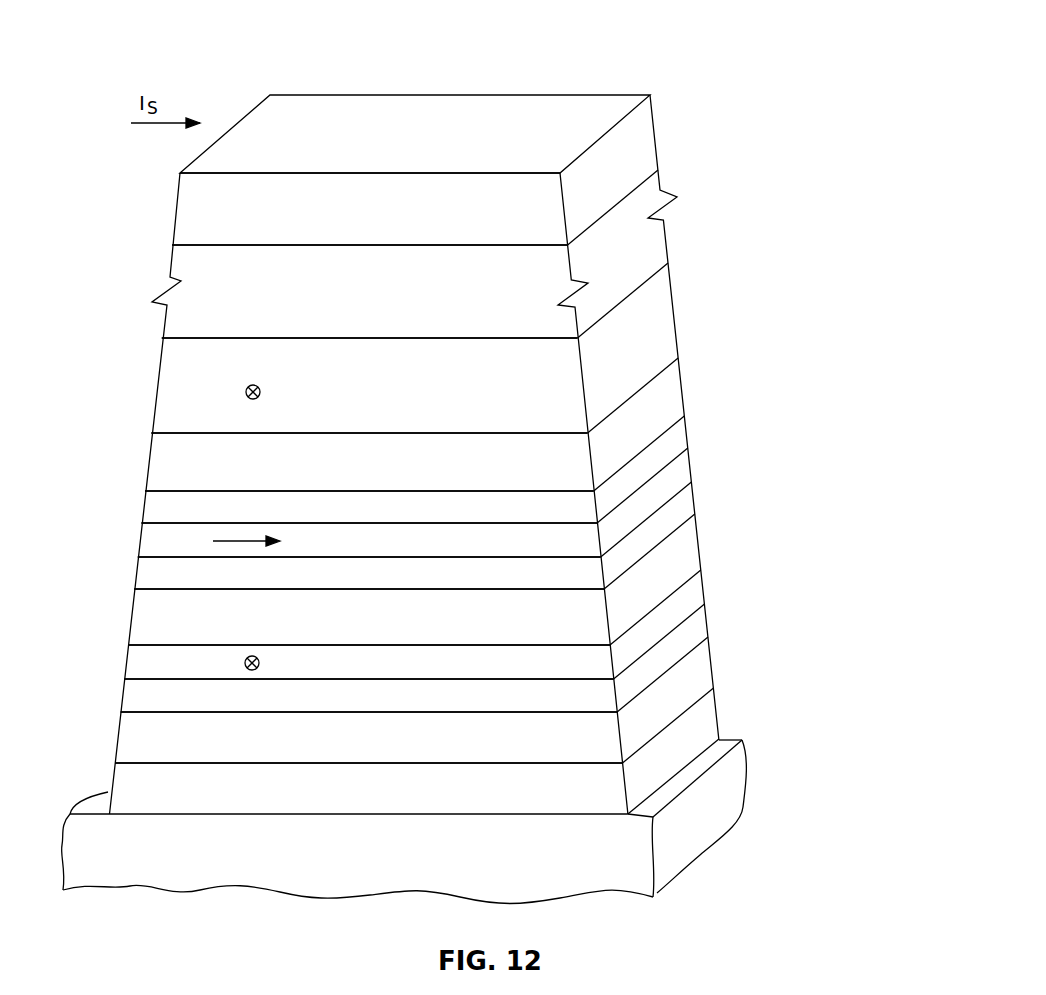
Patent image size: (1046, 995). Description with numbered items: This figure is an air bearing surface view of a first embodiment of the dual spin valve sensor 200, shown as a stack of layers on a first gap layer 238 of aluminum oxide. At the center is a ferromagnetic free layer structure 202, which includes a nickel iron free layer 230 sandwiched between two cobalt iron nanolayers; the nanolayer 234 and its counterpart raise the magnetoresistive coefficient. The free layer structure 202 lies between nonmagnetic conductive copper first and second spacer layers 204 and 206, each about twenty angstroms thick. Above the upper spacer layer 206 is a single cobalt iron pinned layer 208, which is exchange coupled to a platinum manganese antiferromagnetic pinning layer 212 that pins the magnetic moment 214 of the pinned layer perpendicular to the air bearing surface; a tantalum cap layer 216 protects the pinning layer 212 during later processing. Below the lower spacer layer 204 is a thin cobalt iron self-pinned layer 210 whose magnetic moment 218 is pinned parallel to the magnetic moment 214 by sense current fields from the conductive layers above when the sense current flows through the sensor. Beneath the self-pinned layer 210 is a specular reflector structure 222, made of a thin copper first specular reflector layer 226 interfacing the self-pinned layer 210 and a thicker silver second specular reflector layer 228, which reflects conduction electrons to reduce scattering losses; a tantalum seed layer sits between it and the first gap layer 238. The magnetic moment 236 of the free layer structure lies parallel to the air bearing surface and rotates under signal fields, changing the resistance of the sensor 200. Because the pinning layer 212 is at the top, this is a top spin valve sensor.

The dual spin valve sensor 200 is at (606, 68).
The free layer structure 202 is at (90, 491).
The first spacer layer 204 is at (693, 548).
The second spacer layer 206 is at (677, 388).
The pinned layer 208 is at (667, 312).
The self-pinned layer 210 is at (698, 590).
The antiferromagnetic pinning layer 212 is at (658, 243).
The magnetic moment of the pinned layer 214 is at (245, 392).
The cap layer 216 is at (648, 128).
The magnetic moment of the self-pinned layer 218 is at (244, 663).
The specular reflector structure 222 is at (32, 679).
The first specular reflector layer 226 is at (703, 625).
The second specular reflector layer 228 is at (702, 670).
The free layer 230 is at (687, 468).
The second nanolayer 234 is at (683, 435).
The magnetic moment of the free layer structure 236 is at (237, 540).
The first gap layer 238 is at (693, 853).